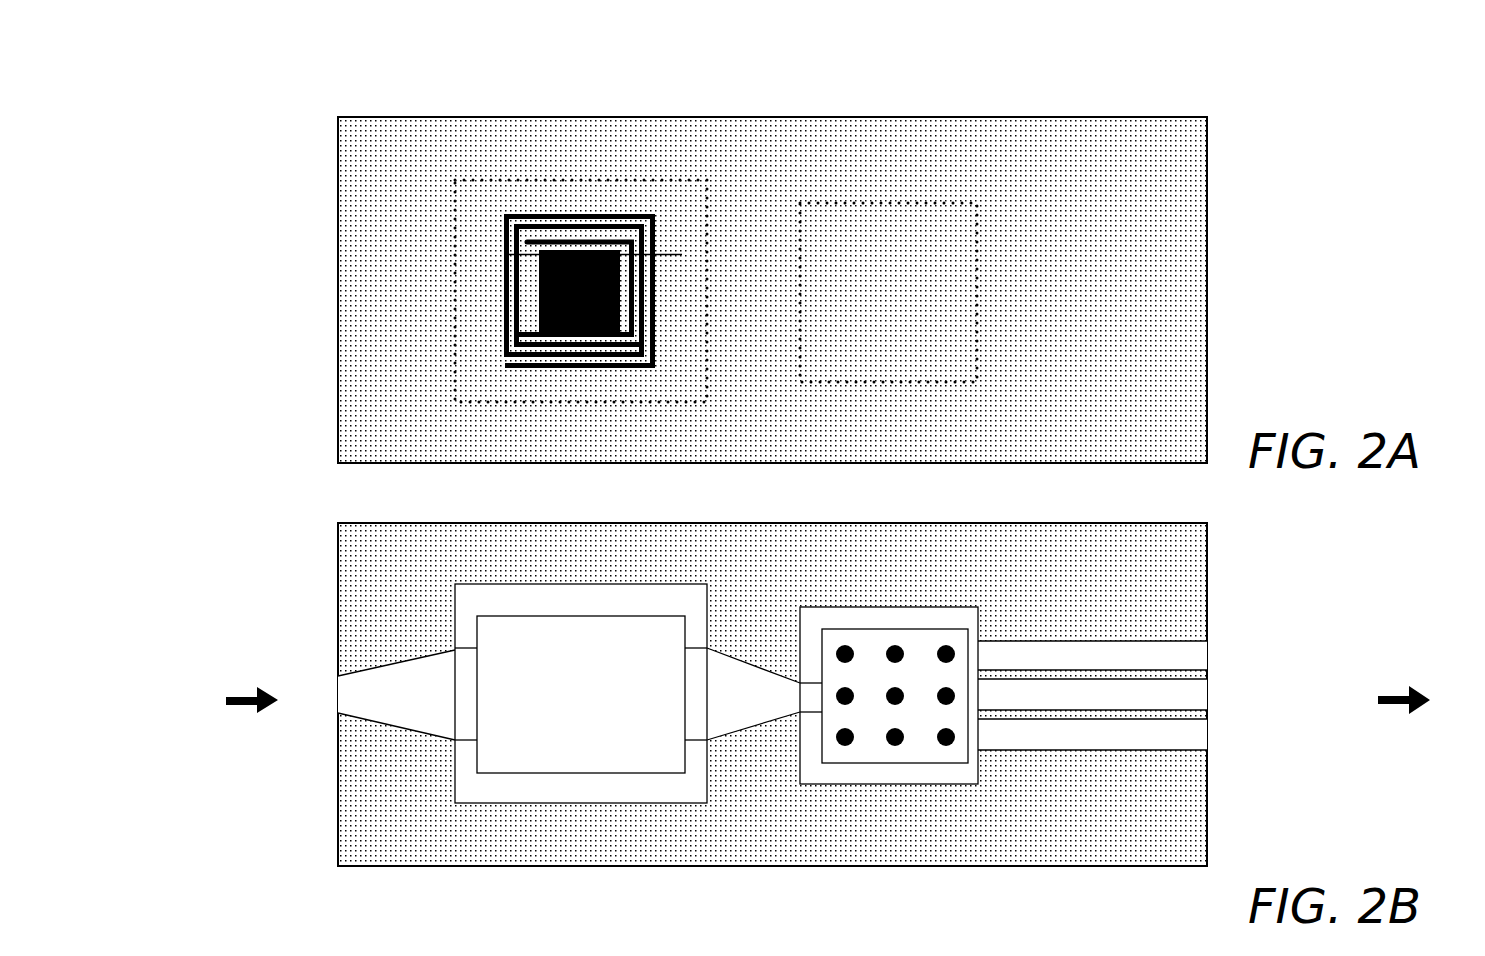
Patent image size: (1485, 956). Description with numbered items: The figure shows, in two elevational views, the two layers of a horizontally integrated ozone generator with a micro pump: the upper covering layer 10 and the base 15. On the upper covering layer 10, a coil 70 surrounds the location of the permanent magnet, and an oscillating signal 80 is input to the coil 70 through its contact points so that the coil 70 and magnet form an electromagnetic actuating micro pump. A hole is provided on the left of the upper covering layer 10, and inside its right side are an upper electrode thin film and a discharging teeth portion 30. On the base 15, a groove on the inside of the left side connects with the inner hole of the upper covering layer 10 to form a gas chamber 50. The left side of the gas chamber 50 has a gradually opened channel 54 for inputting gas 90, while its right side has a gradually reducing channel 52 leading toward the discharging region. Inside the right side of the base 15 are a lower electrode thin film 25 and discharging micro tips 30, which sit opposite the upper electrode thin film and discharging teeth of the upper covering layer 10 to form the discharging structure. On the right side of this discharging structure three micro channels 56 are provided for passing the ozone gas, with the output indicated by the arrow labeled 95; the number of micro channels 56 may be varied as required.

In FIG. 2A, the upper covering layer 10 is at (372, 259).
In FIG. 2B, the base 15 is at (343, 787).
In FIG. 2B, the lower electrode thin film 25 is at (877, 764).
In FIG. 2B, the discharging micro tips 30 is at (946, 748).
In FIG. 2B, the gas chamber 50 is at (531, 766).
In FIG. 2B, the gradually reducing channel 52 is at (741, 718).
In FIG. 2B, the gradually opened channel 54 is at (345, 691).
In FIG. 2B, the micro channels 56 is at (1205, 665).
In FIG. 2A, the coil 70 is at (632, 215).
In FIG. 2A, the oscillating signal 80 is at (560, 250).
In FIG. 2B, the gas 90 is at (229, 700).
In FIG. 2B, the optical output signal 95 is at (1383, 700).